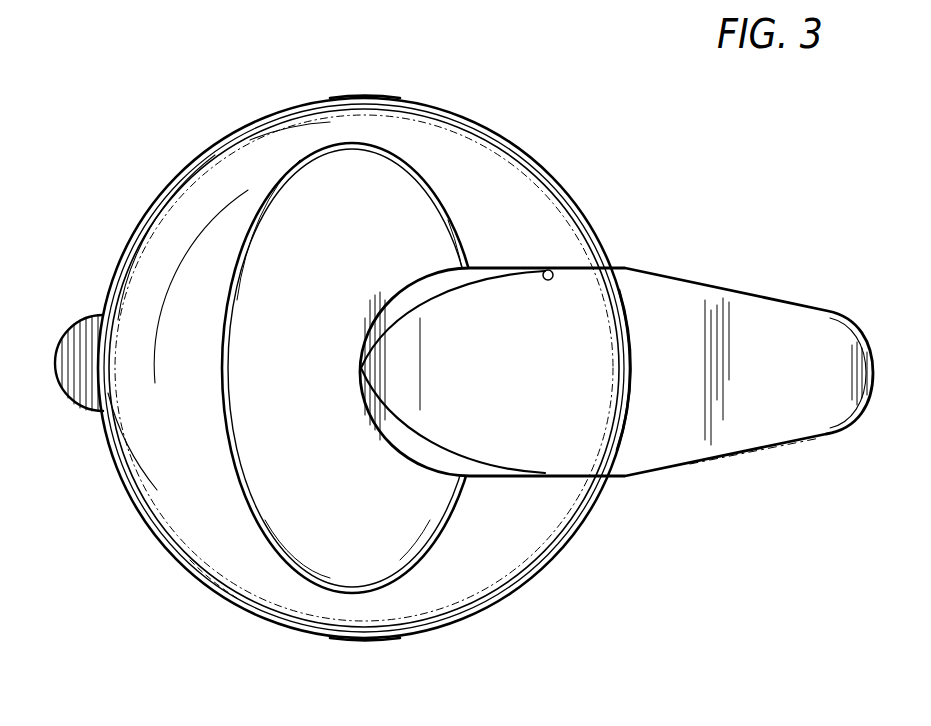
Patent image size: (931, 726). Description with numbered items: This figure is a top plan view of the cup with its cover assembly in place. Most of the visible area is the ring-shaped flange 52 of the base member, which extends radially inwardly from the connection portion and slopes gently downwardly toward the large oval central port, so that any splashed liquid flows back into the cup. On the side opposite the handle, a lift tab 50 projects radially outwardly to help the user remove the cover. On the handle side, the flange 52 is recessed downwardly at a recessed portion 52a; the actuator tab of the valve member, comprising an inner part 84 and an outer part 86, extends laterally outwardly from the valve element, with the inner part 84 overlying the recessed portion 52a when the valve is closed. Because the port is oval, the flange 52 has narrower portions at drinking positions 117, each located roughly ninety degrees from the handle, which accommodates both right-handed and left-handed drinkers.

The lift tab 50 is at (78, 390).
The ring-shaped flange 52 is at (207, 193).
The recessed portion 52a is at (562, 262).
The inner part 84 is at (590, 343).
The outer part 86 is at (782, 337).
The drinking positions 117 is at (372, 98).